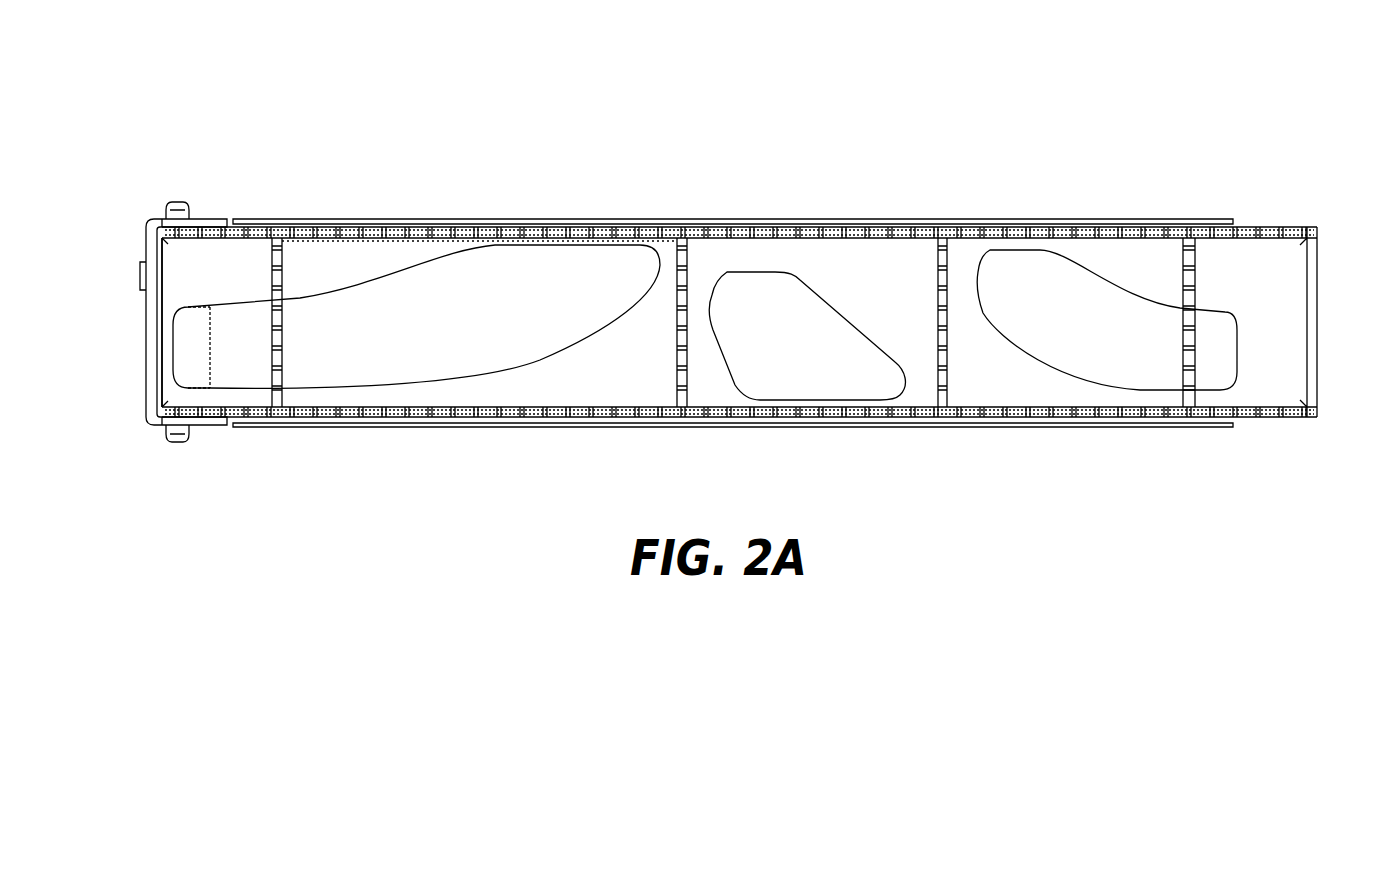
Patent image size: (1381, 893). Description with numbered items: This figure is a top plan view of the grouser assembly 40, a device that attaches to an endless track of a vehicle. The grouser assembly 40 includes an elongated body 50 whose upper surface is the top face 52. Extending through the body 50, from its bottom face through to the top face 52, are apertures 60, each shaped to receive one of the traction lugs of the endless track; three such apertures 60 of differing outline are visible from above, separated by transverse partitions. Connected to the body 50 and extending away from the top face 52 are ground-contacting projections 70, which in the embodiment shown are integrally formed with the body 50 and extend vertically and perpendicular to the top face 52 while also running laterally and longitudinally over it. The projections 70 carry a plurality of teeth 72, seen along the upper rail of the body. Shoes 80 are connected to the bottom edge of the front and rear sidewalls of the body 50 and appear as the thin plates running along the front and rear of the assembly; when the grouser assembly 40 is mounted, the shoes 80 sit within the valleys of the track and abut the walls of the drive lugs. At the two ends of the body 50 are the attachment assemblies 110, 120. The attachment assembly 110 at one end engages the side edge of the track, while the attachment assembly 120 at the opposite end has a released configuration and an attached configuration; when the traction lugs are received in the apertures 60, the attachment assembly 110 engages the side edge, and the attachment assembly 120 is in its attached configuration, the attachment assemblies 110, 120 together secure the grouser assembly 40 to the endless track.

The grouser assembly 40 is at (160, 112).
The body 50 is at (299, 265).
The top face 52 is at (375, 266).
The apertures 60 is at (455, 282).
The ground-contacting projections 70 is at (814, 232).
The teeth 72 is at (1033, 226).
The shoes 80 is at (655, 218).
The attachment assembly 110 is at (1318, 330).
The attachment assembly 120 is at (148, 325).